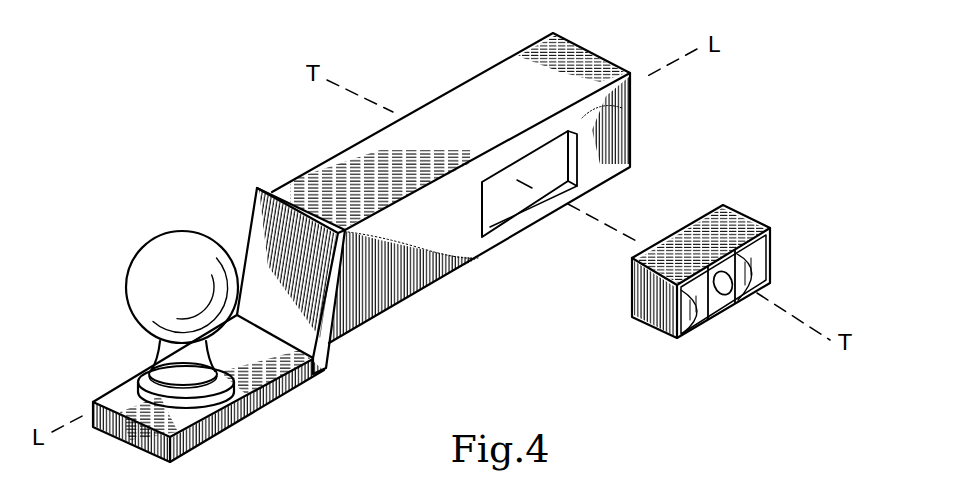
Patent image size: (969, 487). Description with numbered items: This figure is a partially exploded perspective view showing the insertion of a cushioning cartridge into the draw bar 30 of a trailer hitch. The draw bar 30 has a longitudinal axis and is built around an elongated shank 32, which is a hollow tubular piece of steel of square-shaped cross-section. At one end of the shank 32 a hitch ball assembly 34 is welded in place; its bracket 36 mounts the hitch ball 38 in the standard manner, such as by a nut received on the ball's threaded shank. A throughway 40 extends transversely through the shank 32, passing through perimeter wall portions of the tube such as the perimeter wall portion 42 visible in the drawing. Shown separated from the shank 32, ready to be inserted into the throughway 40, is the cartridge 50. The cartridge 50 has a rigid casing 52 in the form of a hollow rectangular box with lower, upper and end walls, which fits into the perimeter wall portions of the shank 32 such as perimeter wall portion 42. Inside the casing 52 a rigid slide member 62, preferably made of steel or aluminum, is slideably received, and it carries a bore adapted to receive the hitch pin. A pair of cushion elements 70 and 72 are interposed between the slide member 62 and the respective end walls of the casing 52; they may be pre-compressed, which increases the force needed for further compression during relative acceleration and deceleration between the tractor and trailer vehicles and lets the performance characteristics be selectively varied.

The draw bar 30 is at (316, 128).
The shank 32 is at (427, 95).
The hitch ball assembly 34 is at (231, 218).
The bracket 36 is at (296, 371).
The hitch ball 38 is at (160, 272).
The throughway 40 is at (536, 200).
The perimeter wall portion 42 is at (503, 226).
The cartridge 50 is at (745, 190).
The casing 52 is at (760, 293).
The slide member 62 is at (725, 305).
The cushion element 70 is at (752, 258).
The cushion element 72 is at (705, 320).